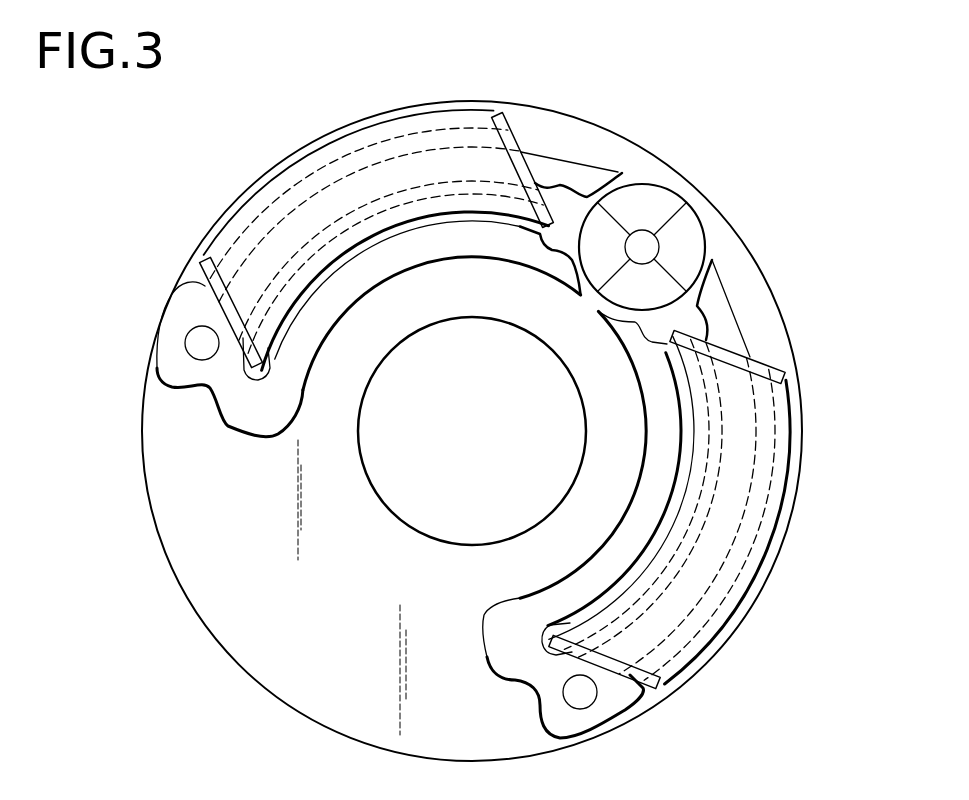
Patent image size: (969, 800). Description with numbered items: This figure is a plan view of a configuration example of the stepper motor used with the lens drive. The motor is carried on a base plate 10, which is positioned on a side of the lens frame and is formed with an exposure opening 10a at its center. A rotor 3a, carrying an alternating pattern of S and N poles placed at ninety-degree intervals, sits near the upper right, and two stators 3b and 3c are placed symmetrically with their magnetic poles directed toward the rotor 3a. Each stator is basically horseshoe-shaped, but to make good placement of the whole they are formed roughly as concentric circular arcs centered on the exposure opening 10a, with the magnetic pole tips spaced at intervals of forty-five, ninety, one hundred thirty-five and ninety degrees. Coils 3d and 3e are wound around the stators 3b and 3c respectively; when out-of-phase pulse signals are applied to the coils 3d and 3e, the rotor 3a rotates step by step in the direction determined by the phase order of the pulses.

The base plate 10 is at (204, 622).
The exposure opening 10a is at (389, 512).
The rotor 3a is at (671, 190).
The stator 3b is at (248, 432).
The stator 3c is at (488, 660).
The coil 3d is at (238, 202).
The coil 3e is at (737, 608).